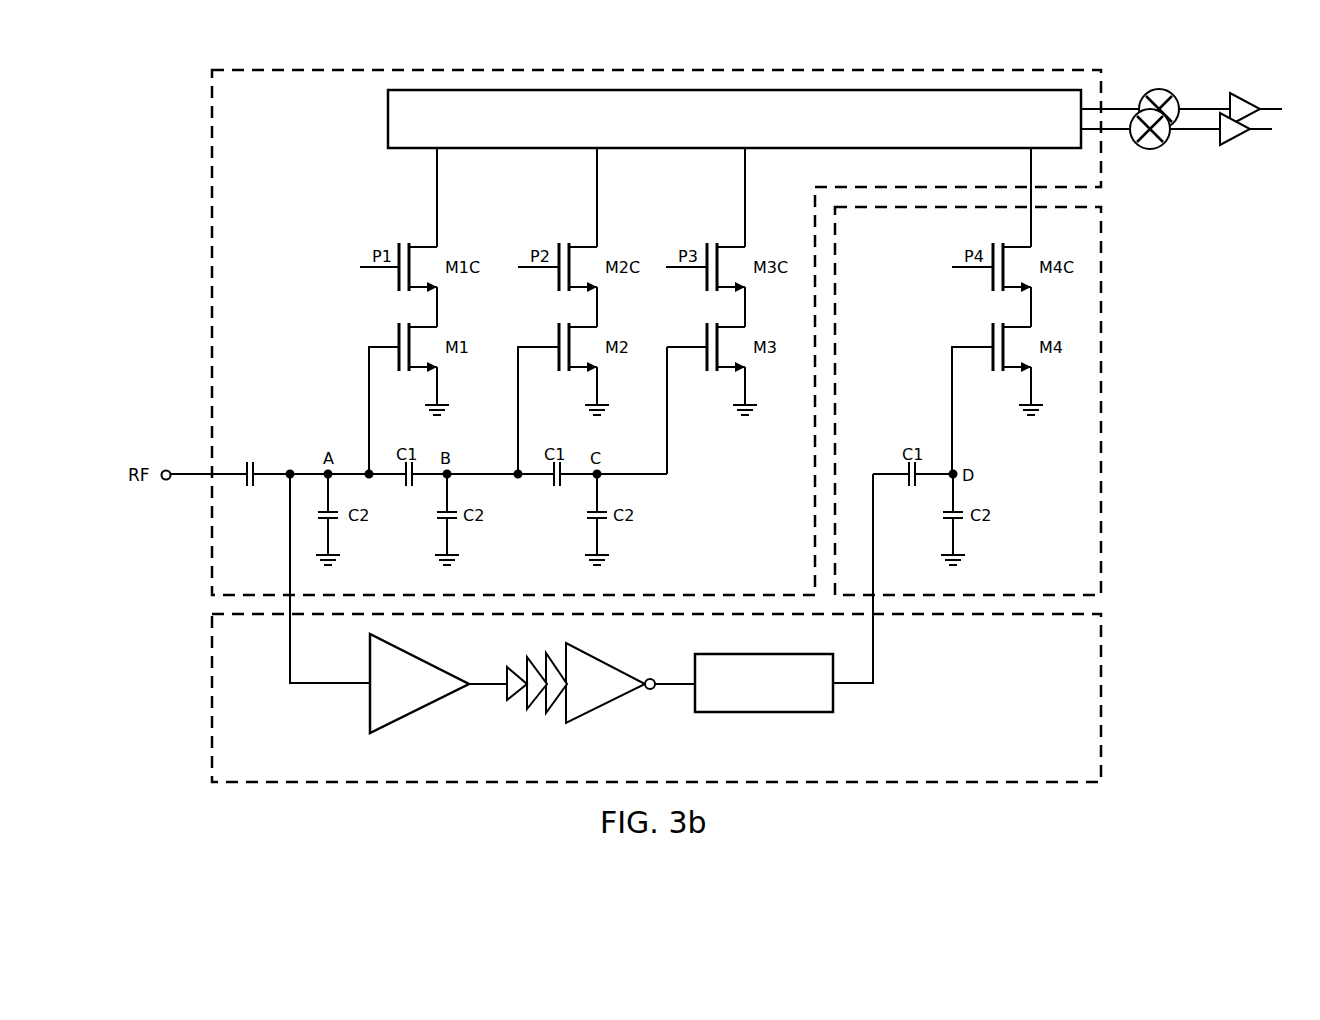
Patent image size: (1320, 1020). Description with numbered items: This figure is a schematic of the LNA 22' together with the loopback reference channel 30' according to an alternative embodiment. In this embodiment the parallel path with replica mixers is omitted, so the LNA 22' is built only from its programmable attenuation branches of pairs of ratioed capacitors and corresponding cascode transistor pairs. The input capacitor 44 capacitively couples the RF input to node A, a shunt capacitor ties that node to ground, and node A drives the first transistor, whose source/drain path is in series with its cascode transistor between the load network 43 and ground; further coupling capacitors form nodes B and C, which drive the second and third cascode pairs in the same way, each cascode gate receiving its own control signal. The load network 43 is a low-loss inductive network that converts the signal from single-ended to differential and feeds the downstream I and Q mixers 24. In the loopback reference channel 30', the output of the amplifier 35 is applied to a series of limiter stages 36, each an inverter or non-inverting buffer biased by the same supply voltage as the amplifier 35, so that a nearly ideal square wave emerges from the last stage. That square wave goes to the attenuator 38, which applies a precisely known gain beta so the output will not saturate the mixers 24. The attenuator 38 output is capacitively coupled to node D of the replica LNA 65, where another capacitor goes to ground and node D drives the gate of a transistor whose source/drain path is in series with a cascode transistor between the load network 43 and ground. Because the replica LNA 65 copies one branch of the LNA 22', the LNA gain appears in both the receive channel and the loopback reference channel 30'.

The LNA 22' is at (622, 332).
The load network 43 is at (388, 119).
The mixers 24 is at (1185, 75).
The replica LNA 65 is at (1106, 398).
The input capacitor 44 is at (251, 488).
The amplifier 35 is at (370, 704).
The limiter stages 36 is at (655, 729).
The attenuator 38 is at (763, 712).
The loopback reference channel 30' is at (622, 698).